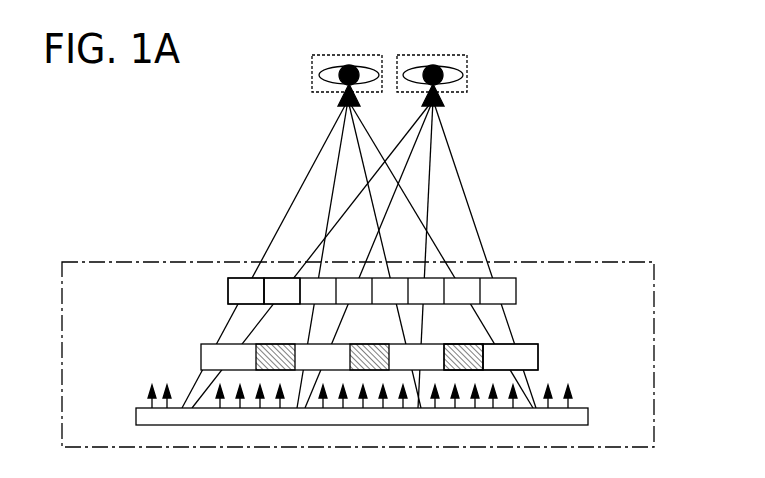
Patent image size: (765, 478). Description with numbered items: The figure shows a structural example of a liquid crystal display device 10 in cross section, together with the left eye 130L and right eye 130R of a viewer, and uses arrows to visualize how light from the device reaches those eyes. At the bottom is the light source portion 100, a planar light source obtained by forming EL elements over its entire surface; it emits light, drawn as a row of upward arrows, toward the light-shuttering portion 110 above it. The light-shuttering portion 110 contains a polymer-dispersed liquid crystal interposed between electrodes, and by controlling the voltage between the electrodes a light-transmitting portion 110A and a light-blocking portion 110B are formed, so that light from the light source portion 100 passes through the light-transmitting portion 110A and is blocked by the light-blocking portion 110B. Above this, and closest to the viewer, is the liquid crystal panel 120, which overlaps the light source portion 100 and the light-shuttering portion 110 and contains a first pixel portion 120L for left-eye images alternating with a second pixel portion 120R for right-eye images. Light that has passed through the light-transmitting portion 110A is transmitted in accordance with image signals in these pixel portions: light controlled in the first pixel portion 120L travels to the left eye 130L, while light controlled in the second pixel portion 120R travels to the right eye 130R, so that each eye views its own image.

The liquid crystal display device 10 is at (645, 439).
The light source portion 100 is at (127, 402).
The light-shuttering portion 110 is at (190, 346).
The light-transmitting portion 110A is at (528, 362).
The light-blocking portion 110B is at (466, 345).
The liquid crystal panel 120 is at (213, 280).
The second pixel portion 120R is at (241, 278).
The first pixel portion 120L is at (282, 278).
The right eye 130R is at (353, 55).
The left eye 130L is at (437, 55).